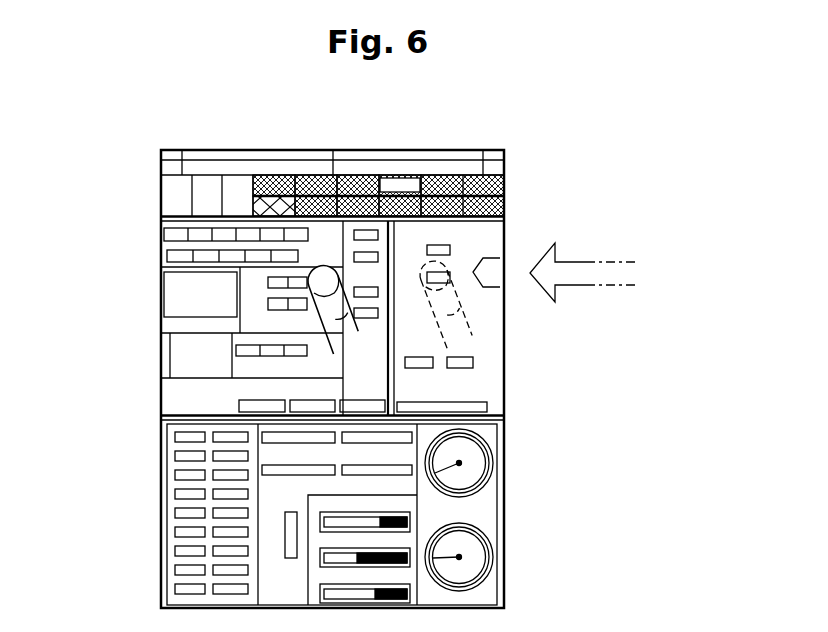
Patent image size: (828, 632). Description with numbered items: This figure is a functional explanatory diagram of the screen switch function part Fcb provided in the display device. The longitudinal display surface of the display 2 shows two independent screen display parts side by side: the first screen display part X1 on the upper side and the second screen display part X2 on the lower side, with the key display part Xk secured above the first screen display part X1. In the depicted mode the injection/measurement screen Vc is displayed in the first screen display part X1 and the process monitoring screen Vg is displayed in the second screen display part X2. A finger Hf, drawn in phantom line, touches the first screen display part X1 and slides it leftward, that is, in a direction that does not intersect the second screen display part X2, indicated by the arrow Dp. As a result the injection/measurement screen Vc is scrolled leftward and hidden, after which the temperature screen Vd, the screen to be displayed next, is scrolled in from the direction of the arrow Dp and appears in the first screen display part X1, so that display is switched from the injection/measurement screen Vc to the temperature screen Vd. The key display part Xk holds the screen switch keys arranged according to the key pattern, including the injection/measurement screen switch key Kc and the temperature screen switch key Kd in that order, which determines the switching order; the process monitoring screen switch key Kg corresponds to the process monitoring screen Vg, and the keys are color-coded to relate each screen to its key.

The display 2 is at (483, 143).
The screen switch function part Fcb is at (542, 165).
The key display part Xk is at (152, 195).
The process monitoring screen switch key Kg is at (282, 178).
The injection/measurement screen switch key Kc is at (362, 175).
The temperature screen switch key Kd is at (403, 184).
The first screen display part X1 is at (152, 276).
The second screen display part X2 is at (151, 512).
The injection/measurement screen Vc is at (187, 387).
The temperature screen Vd is at (489, 386).
The process monitoring screen Vg is at (488, 511).
The finger Hf is at (303, 325).
The arrow direction Dp is at (580, 262).